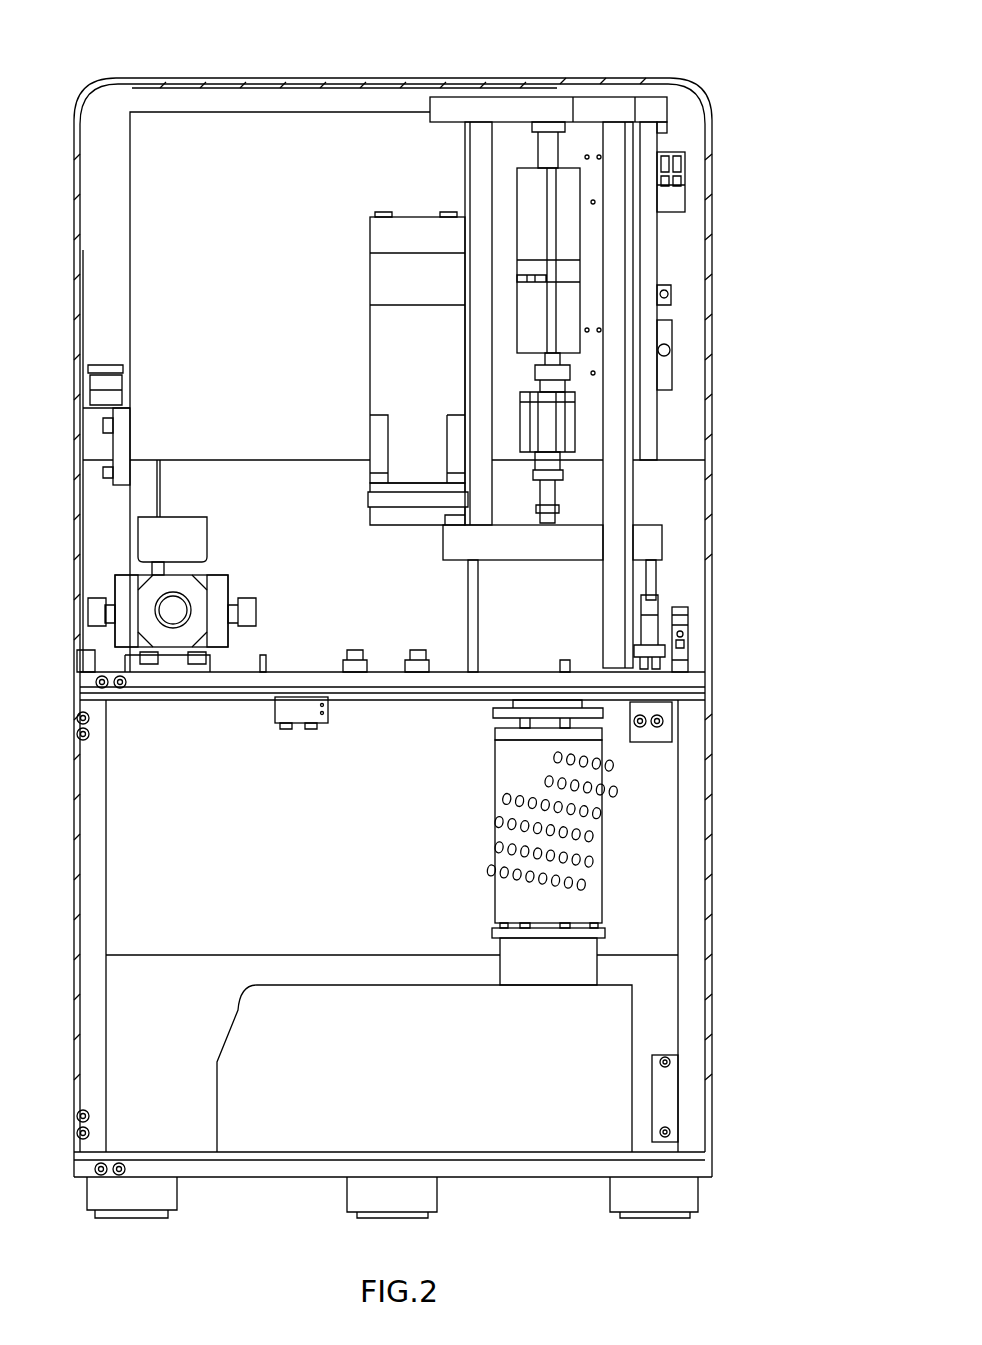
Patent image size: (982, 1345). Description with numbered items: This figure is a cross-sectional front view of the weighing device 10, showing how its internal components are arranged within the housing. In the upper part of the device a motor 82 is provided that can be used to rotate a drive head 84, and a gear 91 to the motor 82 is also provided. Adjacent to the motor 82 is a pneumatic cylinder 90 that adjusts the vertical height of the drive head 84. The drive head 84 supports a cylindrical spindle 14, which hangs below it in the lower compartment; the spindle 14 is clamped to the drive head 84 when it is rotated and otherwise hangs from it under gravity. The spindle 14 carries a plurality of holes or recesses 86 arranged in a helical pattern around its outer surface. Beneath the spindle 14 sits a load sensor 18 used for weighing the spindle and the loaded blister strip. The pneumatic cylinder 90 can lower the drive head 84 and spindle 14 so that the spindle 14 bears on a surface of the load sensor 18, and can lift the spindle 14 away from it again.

The weighing device 10 is at (706, 75).
The motor 82 is at (365, 262).
The pneumatic cylinder 90 is at (578, 272).
The gear 91 is at (645, 539).
The drive head 84 is at (690, 640).
The cylindrical spindle 14 is at (587, 751).
The holes or recesses 86 is at (590, 848).
The load sensor 18 is at (525, 1083).